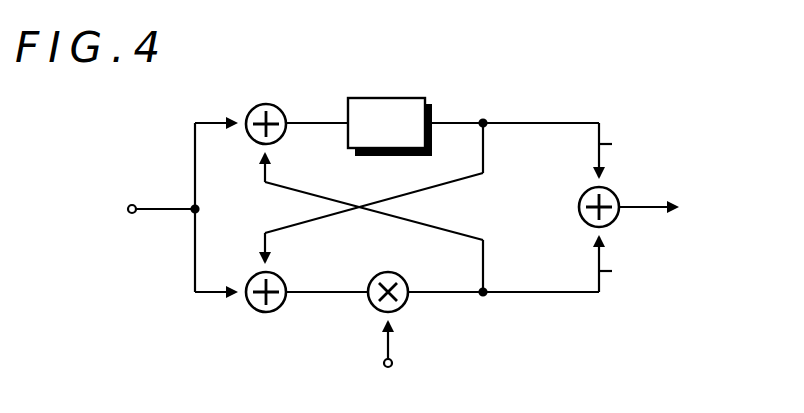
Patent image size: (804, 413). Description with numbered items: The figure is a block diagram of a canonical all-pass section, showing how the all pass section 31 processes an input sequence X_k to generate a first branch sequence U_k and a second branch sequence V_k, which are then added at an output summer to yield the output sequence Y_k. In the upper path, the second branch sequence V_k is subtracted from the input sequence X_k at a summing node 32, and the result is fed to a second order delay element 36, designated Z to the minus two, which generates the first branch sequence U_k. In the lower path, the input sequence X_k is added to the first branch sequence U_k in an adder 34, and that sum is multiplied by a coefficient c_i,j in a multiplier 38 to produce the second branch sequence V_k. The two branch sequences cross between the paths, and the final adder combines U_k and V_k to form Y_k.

The all pass section 31 is at (606, 105).
The first adder 32 is at (266, 103).
The adder 34 is at (267, 314).
The second order delay element 36 is at (388, 98).
The multiplier 38 is at (388, 273).